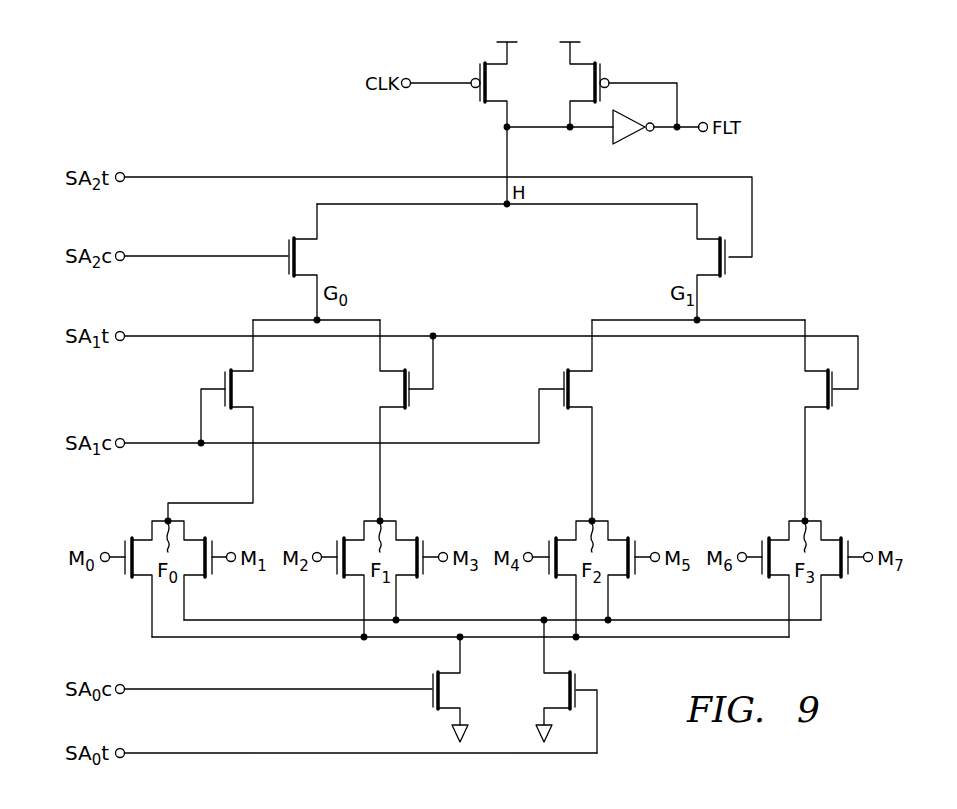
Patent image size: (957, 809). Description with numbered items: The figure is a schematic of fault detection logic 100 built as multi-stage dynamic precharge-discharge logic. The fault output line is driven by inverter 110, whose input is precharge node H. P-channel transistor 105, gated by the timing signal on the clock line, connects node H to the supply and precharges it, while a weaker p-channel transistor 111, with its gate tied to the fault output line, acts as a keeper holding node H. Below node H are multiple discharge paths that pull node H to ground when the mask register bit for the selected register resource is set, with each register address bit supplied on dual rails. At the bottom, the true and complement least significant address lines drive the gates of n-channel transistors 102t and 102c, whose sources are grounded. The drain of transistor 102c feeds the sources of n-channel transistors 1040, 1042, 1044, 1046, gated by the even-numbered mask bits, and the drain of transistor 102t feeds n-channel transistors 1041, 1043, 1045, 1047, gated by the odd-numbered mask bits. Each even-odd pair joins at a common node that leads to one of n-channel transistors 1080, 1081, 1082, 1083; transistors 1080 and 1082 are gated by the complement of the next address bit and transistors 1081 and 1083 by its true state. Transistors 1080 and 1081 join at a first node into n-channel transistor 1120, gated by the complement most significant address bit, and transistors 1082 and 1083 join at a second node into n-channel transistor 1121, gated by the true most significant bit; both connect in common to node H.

The fault detection logic 100 is at (219, 120).
The p-channel transistor 105 is at (478, 67).
The p-channel transistor 111 is at (603, 67).
The inverter 110 is at (633, 135).
The n-channel transistor 1120 is at (288, 270).
The n-channel transistor 1121 is at (728, 272).
The n-channel transistor 1080 is at (223, 375).
The n-channel transistor 1081 is at (412, 403).
The n-channel transistor 1082 is at (563, 373).
The n-channel transistor 1083 is at (835, 403).
The n-channel transistor 1040 is at (124, 540).
The n-channel transistor 1041 is at (213, 576).
The n-channel transistor 1042 is at (336, 540).
The n-channel transistor 1043 is at (424, 576).
The n-channel transistor 1044 is at (548, 540).
The n-channel transistor 1045 is at (636, 576).
The n-channel transistor 1046 is at (761, 540).
The n-channel transistor 1047 is at (849, 576).
The n-channel transistor 102c is at (430, 675).
The n-channel transistor 102t is at (576, 672).